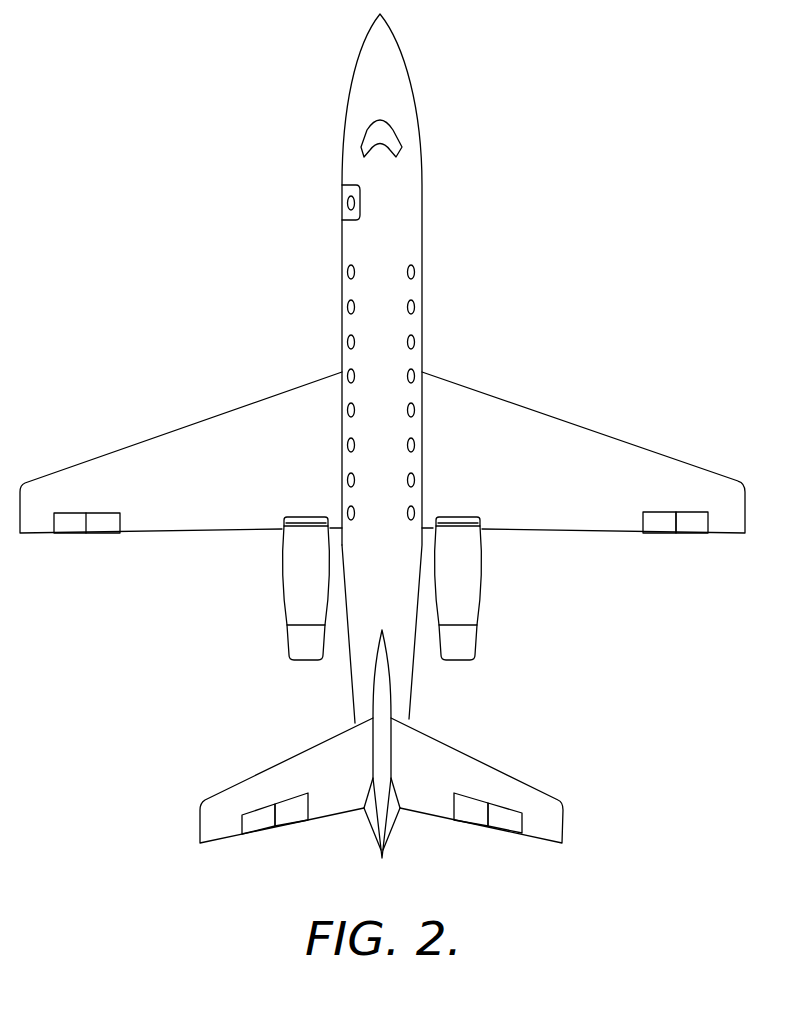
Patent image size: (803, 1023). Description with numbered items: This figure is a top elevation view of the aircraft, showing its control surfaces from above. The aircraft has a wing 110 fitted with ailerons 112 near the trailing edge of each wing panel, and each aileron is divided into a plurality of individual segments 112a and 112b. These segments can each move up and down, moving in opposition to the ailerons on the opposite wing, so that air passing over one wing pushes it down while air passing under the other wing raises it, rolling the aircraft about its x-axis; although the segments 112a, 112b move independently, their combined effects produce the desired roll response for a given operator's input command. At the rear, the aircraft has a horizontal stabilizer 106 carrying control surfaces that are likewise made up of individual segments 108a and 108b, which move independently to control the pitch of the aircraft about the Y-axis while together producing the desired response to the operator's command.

The wing 110 is at (631, 479).
The ailerons 112 is at (413, 557).
The aileron segment 112a is at (695, 530).
The aileron segment 112b is at (662, 530).
The horizontal stabilizer 106 is at (532, 793).
The control surface segment 108a is at (253, 829).
The control surface segment 108b is at (300, 819).